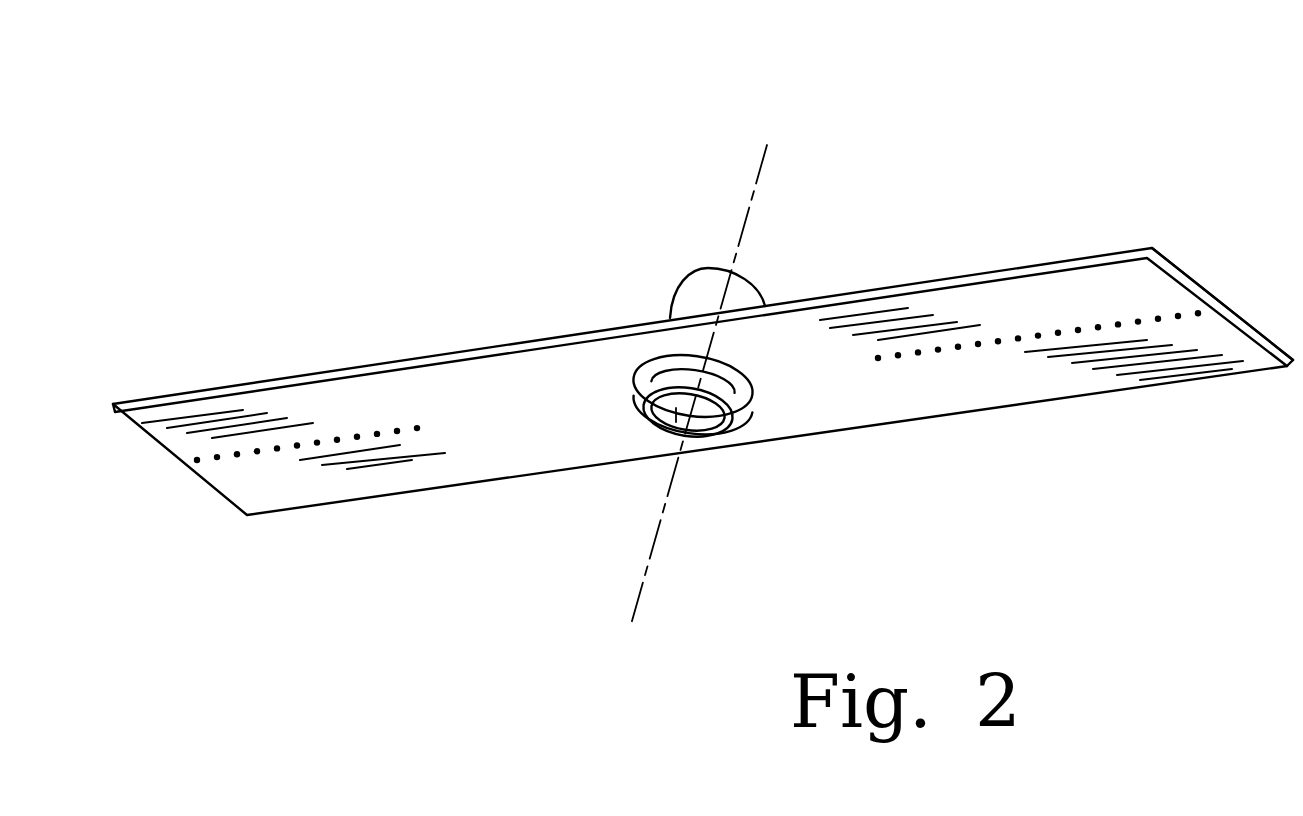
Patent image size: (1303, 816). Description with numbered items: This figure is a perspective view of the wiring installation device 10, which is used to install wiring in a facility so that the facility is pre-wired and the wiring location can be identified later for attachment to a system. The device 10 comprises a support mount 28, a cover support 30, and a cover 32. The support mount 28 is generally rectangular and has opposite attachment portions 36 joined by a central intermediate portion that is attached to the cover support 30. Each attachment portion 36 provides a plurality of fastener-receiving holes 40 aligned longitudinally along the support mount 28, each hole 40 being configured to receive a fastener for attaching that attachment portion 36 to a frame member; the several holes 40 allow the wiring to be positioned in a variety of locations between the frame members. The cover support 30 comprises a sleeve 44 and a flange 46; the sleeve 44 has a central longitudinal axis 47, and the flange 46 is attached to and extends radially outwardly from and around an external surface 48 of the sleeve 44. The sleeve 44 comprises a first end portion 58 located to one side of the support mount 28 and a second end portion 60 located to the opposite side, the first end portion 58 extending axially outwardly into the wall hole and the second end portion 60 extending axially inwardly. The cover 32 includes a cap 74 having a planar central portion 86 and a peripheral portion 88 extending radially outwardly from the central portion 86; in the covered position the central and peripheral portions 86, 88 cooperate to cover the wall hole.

The wiring installation device 10 is at (703, 338).
The support mount 28 is at (466, 460).
The cover support 30 is at (697, 384).
The cover 32 is at (762, 423).
The attachment portions 36 is at (370, 477).
The fastener-receiving holes 40 is at (377, 434).
The sleeve 44 is at (688, 306).
The flange 46 is at (653, 373).
The central longitudinal axis 47 is at (760, 172).
The external surface 48 is at (747, 295).
The first end portion 58 is at (720, 378).
The second end portion 60 is at (738, 287).
The cap 74 is at (733, 452).
The planar central portion 86 is at (677, 410).
The peripheral portion 88 is at (645, 410).